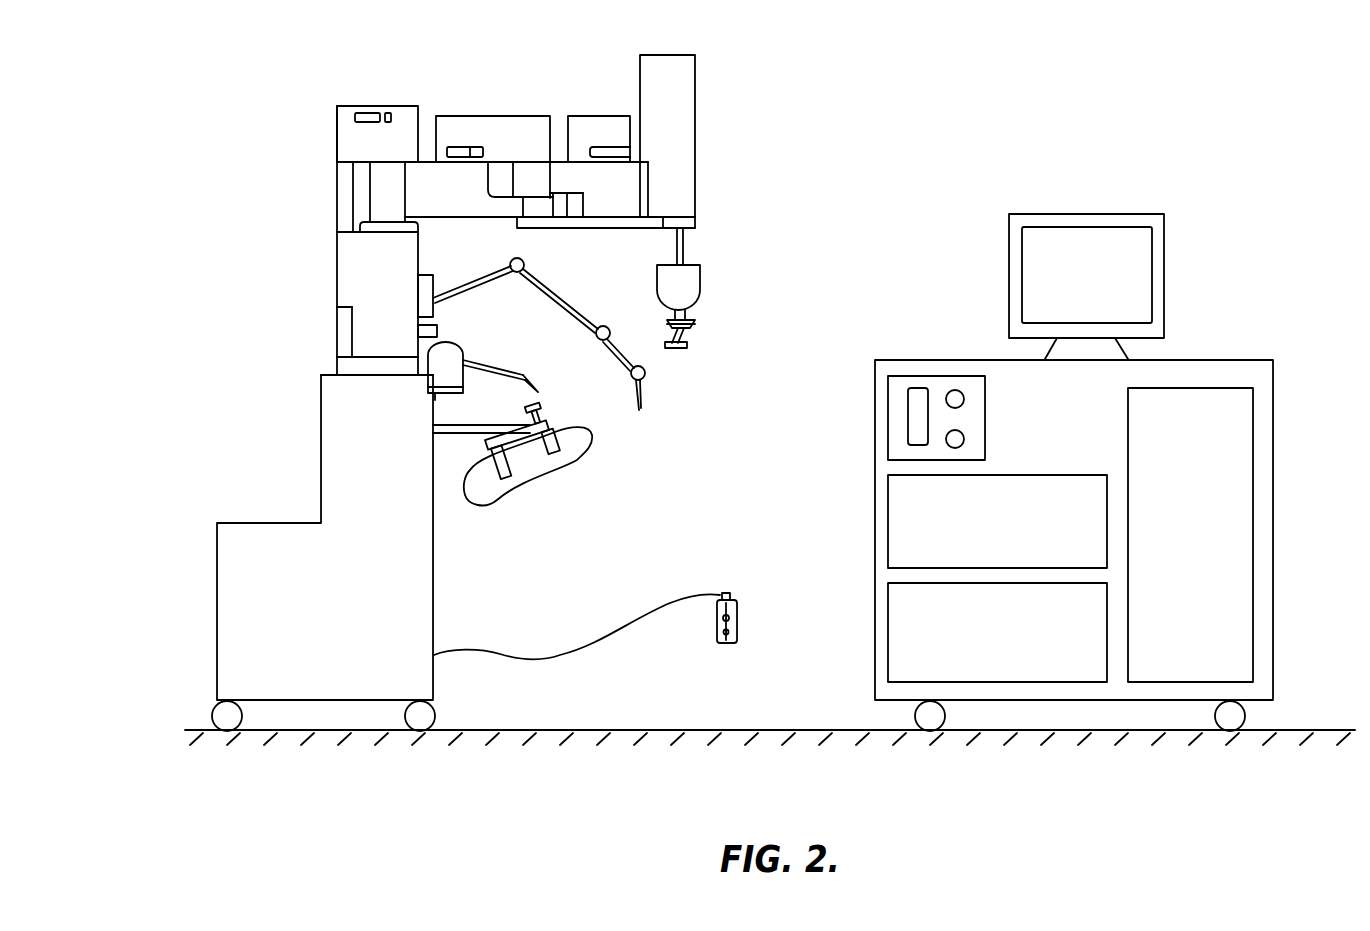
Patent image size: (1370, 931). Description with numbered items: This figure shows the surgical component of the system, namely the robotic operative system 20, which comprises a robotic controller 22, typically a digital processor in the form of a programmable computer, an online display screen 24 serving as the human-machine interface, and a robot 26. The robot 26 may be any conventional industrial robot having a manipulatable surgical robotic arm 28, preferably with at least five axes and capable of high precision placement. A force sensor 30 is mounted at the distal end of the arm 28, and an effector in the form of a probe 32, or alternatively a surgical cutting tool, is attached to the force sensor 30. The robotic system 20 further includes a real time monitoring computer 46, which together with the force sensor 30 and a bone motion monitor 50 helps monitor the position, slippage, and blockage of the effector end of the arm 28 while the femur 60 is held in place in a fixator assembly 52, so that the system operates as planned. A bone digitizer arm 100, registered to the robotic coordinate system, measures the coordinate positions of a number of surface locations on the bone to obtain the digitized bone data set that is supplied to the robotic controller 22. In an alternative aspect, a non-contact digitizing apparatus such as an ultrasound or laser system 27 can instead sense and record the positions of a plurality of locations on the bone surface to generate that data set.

The robotic operative system 20 is at (1289, 116).
The robotic controller 22 is at (887, 523).
The online display screen 24 is at (1165, 260).
The robot 26 is at (300, 164).
The ultrasound or laser system 27 is at (437, 335).
The manipulatable surgical robotic arm 28 is at (707, 236).
The force sensor 30 is at (688, 320).
The probe 32 is at (730, 343).
The real time monitoring computer 46 is at (887, 641).
The bone motion monitor 50 is at (487, 363).
The fixator assembly 52 is at (552, 422).
The femur 60 is at (527, 477).
The bone digitizer arm 100 is at (557, 287).